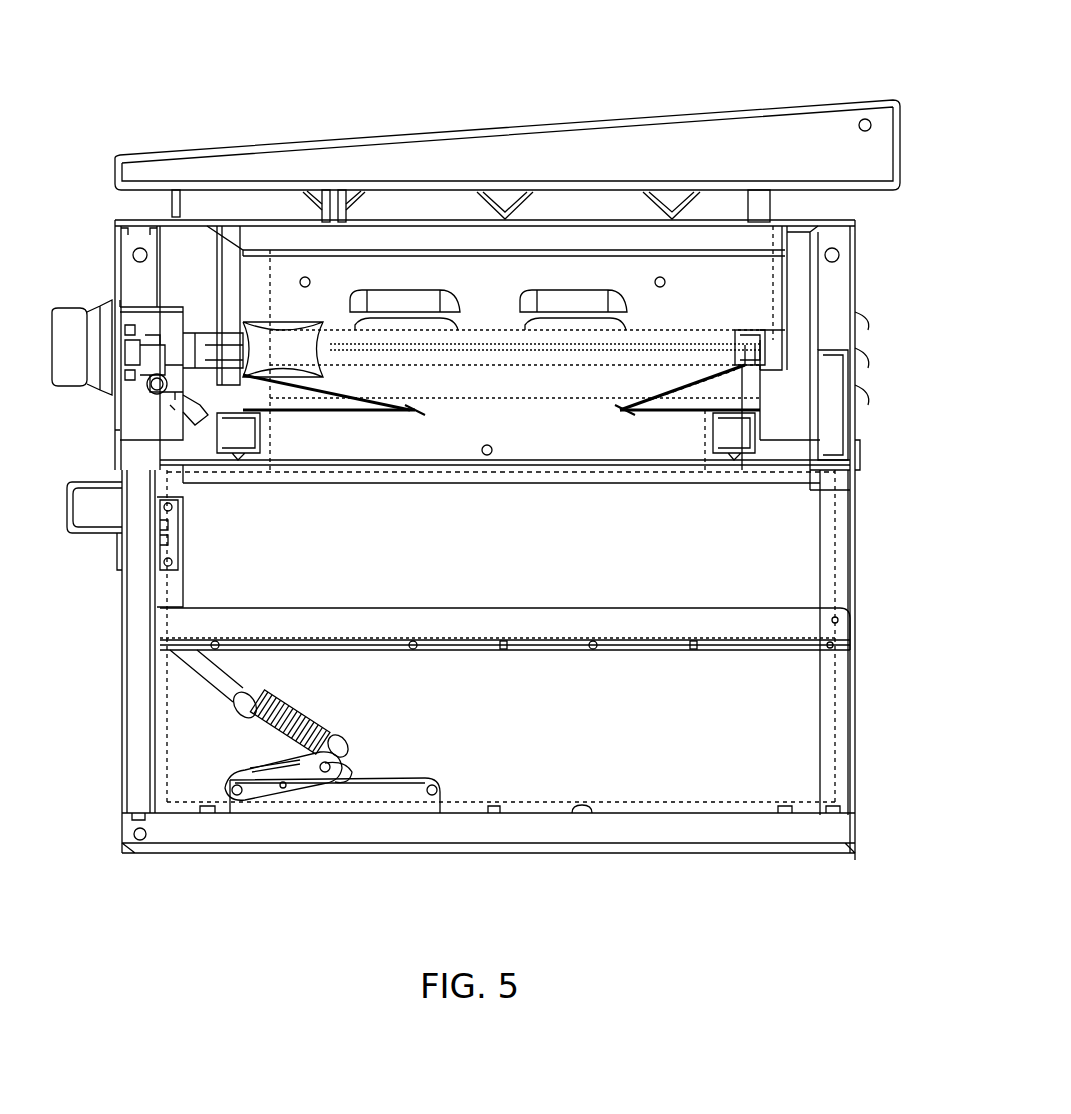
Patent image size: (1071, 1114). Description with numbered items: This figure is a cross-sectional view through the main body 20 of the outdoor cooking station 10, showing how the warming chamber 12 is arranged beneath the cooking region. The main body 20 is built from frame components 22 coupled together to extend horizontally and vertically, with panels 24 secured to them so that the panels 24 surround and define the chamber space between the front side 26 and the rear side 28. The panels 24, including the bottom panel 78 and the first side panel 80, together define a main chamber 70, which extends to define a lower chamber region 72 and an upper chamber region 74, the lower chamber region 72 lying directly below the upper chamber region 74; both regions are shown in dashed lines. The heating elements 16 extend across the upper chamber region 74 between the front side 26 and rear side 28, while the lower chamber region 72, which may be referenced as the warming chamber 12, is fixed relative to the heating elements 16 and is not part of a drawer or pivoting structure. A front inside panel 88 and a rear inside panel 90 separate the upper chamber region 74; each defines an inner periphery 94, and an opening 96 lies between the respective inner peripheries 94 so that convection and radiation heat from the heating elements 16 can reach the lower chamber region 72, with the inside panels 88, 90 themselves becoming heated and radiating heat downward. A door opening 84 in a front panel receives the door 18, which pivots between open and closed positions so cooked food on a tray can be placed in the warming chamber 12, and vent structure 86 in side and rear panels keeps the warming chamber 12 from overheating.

The outdoor cooking station 10 is at (866, 62).
The warming chamber 12 is at (830, 508).
The heating elements 16 is at (640, 330).
The door 18 is at (120, 650).
The main body 20 is at (860, 517).
The frame components 22 is at (815, 752).
The panels 24 is at (860, 765).
The front side 26 is at (66, 748).
The rear side 28 is at (882, 628).
The main chamber 70 is at (777, 278).
The lower chamber region 72 is at (545, 400).
The upper chamber region 74 is at (777, 312).
The bottom panel 78 is at (583, 815).
The first side panel 80 is at (200, 560).
The door opening 84 is at (120, 465).
The vent structure 86 is at (522, 300).
The front inside panel 88 is at (330, 395).
The rear inside panel 90 is at (655, 400).
The inner periphery 94 is at (406, 412).
The opening 96 is at (410, 408).